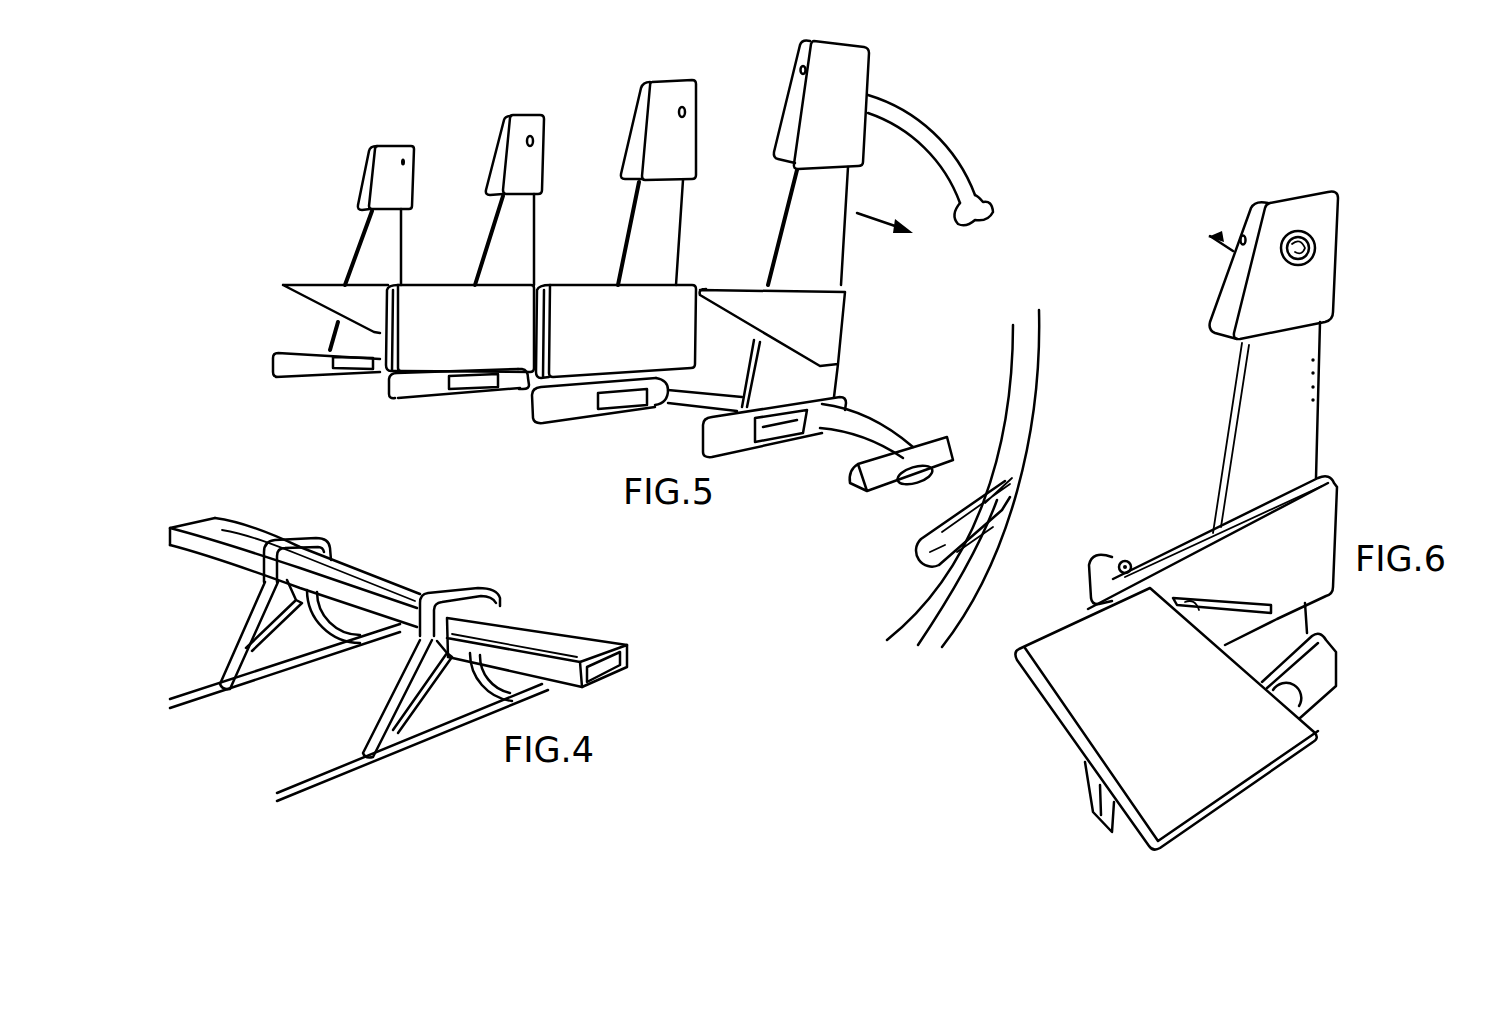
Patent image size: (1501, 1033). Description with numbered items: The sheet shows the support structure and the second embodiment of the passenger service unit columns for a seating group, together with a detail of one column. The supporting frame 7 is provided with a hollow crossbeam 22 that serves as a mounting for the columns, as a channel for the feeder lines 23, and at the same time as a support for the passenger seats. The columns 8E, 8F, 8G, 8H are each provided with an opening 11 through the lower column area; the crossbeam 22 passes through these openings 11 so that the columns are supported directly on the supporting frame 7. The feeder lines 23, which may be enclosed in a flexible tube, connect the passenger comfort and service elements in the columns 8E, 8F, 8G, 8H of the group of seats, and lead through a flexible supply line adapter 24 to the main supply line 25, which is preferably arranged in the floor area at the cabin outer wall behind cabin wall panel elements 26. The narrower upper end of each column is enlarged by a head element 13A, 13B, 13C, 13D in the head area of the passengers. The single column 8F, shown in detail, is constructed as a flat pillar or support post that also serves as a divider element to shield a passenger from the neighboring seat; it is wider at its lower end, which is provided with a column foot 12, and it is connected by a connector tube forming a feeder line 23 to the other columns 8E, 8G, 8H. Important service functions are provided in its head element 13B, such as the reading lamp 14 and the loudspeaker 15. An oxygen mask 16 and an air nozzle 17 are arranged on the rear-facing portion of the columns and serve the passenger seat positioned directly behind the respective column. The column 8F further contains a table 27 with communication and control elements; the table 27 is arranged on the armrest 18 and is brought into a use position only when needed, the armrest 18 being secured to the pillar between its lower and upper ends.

In FIG. 4, the supporting frame 7 is at (399, 659).
In FIG. 5, the column 8E is at (374, 226).
In FIG. 5, the column 8F is at (493, 223).
In FIG. 6, the column 8F is at (1245, 509).
In FIG. 5, the column 8G is at (644, 210).
In FIG. 5, the column 8H is at (806, 207).
In FIG. 5, the opening 11 is at (357, 365).
In FIG. 6, the opening 11 is at (1290, 698).
In FIG. 6, the column foot 12 is at (1323, 668).
In FIG. 5, the head element 13A is at (403, 197).
In FIG. 5, the head element 13B is at (537, 173).
In FIG. 6, the head element 13B is at (1327, 205).
In FIG. 5, the head element 13C is at (664, 148).
In FIG. 5, the head element 13D is at (848, 143).
In FIG. 6, the reading lamp 14 is at (1227, 248).
In FIG. 6, the loudspeaker 15 is at (1316, 255).
In FIG. 5, the oxygen mask 16 is at (940, 145).
In FIG. 5, the air nozzle 17 is at (850, 233).
In FIG. 6, the air nozzle 17 is at (1320, 398).
In FIG. 6, the armrest 18 is at (1177, 540).
In FIG. 4, the hollow crossbeam 22 is at (607, 667).
In FIG. 5, the feeder lines 23 is at (697, 400).
In FIG. 5, the flexible supply line adapter 24 is at (850, 482).
In FIG. 5, the main supply line 25 is at (923, 553).
In FIG. 5, the cabin wall panel elements 26 is at (948, 597).
In FIG. 6, the table 27 is at (1260, 760).